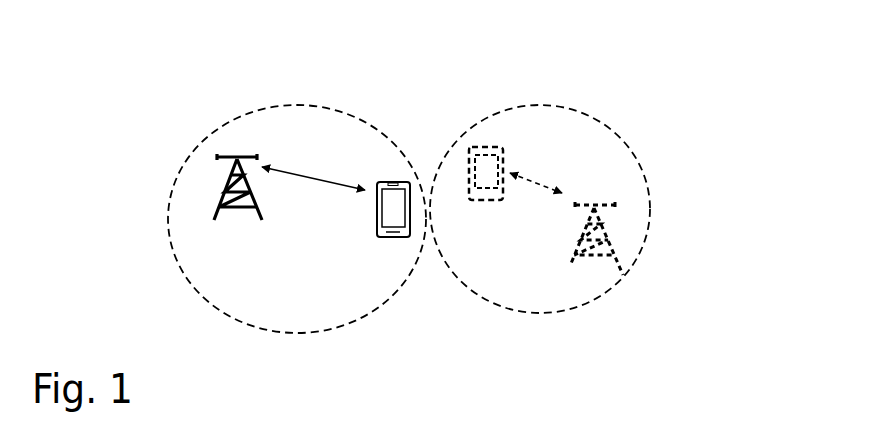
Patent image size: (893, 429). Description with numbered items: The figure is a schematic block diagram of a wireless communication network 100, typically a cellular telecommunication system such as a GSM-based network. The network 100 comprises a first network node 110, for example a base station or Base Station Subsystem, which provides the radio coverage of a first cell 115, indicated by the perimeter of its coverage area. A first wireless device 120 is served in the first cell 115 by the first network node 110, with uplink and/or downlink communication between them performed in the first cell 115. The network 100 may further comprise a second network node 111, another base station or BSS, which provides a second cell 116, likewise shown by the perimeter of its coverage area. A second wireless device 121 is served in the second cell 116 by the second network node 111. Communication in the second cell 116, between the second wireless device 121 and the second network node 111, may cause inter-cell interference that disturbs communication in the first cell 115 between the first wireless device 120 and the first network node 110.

The wireless communication network 100 is at (741, 58).
The first network node 110 is at (255, 197).
The second network node 111 is at (572, 258).
The first cell 115 is at (387, 307).
The second cell 116 is at (618, 288).
The first wireless device 120 is at (377, 212).
The second wireless device 121 is at (503, 165).